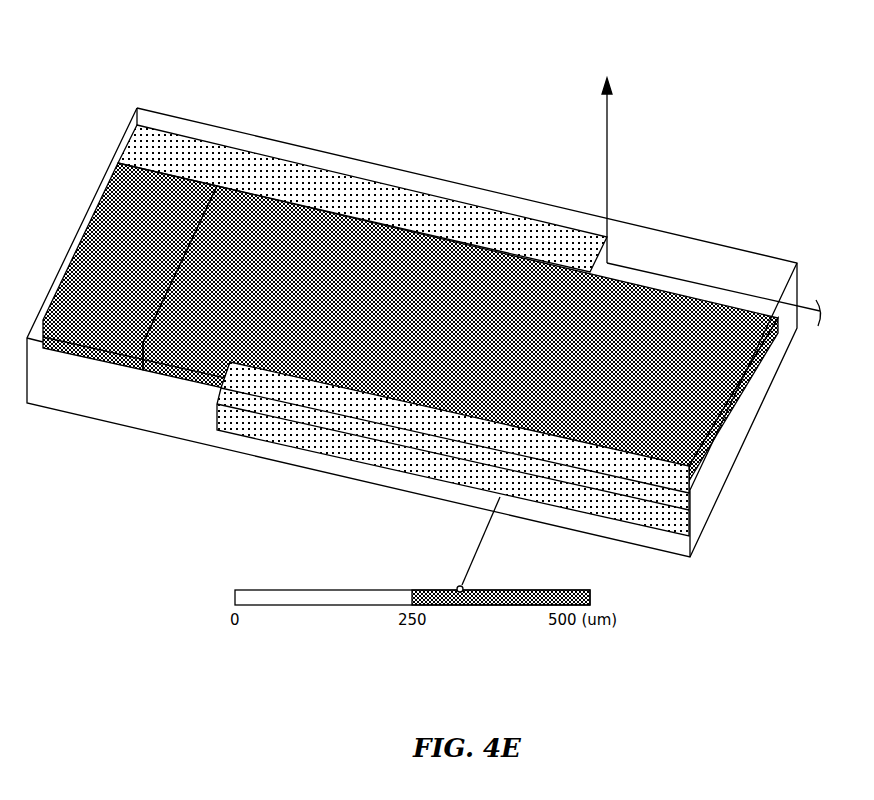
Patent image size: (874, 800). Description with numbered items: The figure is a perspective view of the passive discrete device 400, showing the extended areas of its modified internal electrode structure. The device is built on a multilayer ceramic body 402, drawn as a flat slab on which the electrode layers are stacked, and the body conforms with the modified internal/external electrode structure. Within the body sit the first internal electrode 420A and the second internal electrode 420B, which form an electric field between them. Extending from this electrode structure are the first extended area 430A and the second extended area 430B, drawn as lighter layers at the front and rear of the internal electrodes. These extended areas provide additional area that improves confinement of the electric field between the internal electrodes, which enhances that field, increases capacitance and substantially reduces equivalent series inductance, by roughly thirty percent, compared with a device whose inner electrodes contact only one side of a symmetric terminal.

The passive discrete device 400 is at (208, 70).
The multilayer ceramic body 402 is at (96, 402).
The first internal electrode 420A is at (398, 270).
The second internal electrode 420B is at (410, 339).
The first extended area 430A is at (583, 480).
The second extended area 430B is at (388, 190).